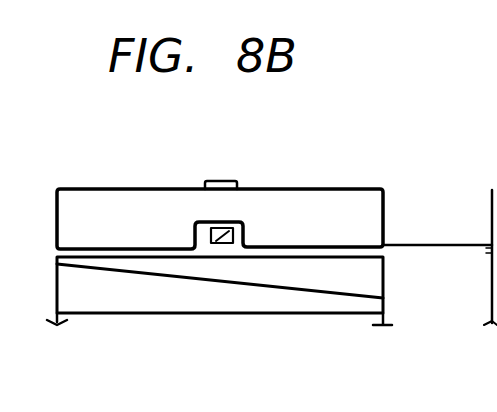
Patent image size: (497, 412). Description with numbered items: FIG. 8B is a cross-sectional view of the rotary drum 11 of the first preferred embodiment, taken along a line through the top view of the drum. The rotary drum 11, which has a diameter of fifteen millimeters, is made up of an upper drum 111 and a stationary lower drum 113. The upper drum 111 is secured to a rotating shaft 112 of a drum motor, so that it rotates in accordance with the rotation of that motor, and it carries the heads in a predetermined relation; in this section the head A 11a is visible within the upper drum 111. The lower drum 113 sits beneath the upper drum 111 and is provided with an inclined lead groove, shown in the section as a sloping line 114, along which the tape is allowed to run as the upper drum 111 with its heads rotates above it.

The rotary drum 11 is at (333, 188).
The head A 11a is at (231, 225).
The upper drum 111 is at (384, 197).
The rotating shaft 112 is at (207, 181).
The lower drum 113 is at (385, 278).
The inclined reflecting surface 114 is at (252, 282).